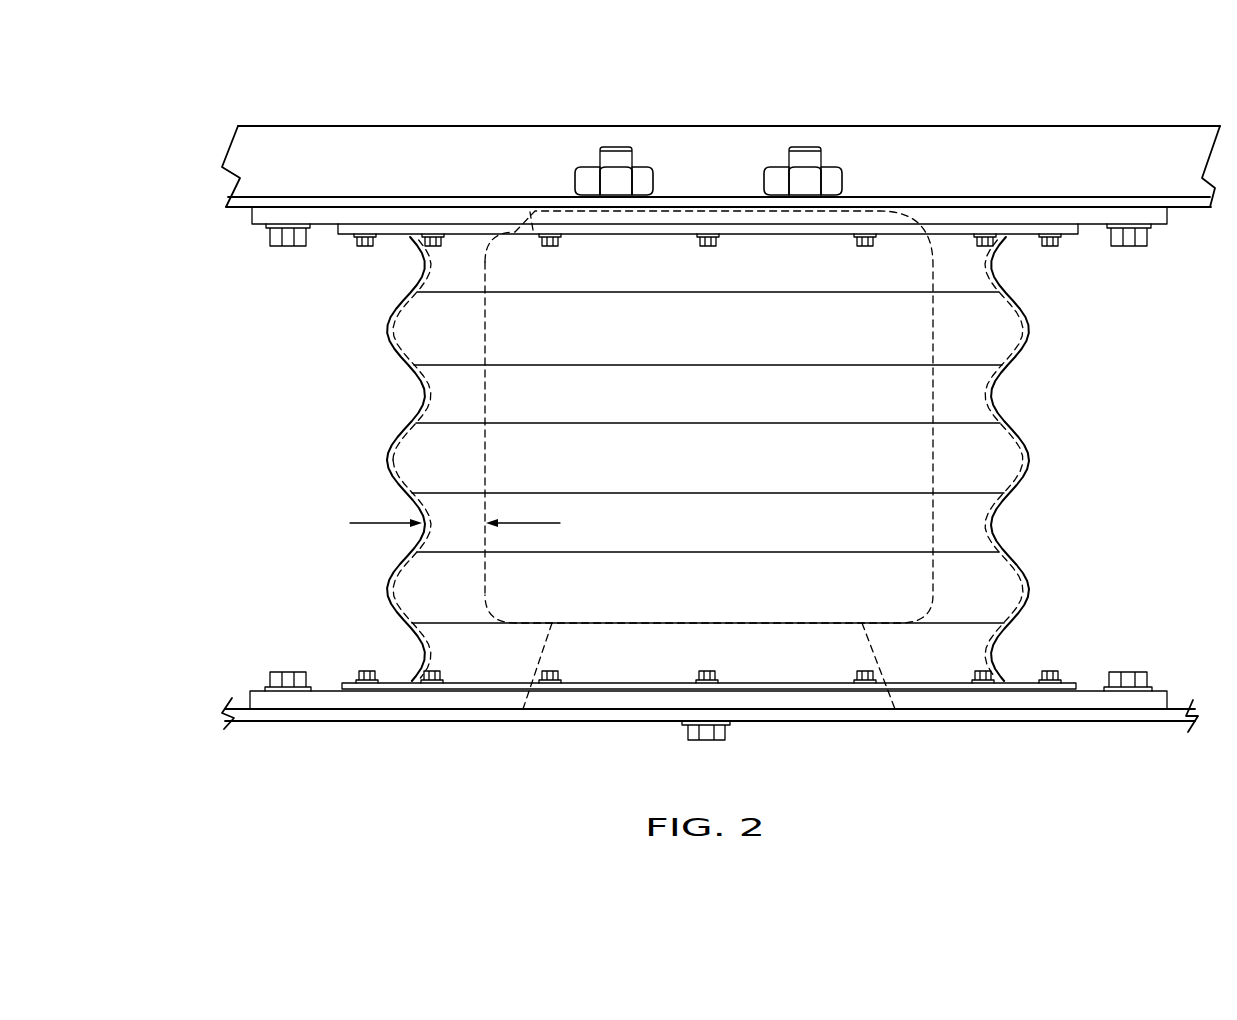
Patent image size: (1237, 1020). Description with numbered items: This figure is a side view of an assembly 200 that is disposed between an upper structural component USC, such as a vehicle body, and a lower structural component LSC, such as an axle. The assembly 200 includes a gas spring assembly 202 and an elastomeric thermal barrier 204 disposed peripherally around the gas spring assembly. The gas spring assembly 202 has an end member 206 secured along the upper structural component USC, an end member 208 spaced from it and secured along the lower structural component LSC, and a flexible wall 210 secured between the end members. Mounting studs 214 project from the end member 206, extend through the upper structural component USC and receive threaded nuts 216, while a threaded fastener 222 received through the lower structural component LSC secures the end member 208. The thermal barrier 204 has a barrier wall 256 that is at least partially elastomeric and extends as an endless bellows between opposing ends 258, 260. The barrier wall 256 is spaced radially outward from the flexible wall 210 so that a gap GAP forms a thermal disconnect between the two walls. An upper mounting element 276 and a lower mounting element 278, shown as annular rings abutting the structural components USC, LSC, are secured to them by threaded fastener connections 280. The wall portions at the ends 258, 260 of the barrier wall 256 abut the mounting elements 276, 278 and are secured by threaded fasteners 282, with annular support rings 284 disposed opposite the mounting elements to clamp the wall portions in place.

The assembly 200 is at (716, 423).
The gas spring assembly 202 is at (950, 353).
The elastomeric thermal barrier 204 is at (700, 459).
The end member 206 is at (524, 208).
The end member 208 is at (535, 657).
The flexible wall 210 is at (474, 392).
The mounting studs 214 is at (601, 160).
The threaded nuts 216 is at (648, 178).
The threaded fastener 222 is at (688, 729).
The barrier wall 256 is at (1040, 494).
The end 258 is at (372, 321).
The end 260 is at (368, 580).
The upper mounting element 276 is at (333, 214).
The lower mounting element 278 is at (332, 702).
The threaded fastener connections 280 is at (270, 236).
The threaded fasteners 282 is at (993, 235).
The annular support rings 284 is at (395, 235).
The upper structural component USC is at (950, 142).
The lower structural component LSC is at (947, 718).
The gap GAP is at (372, 523).